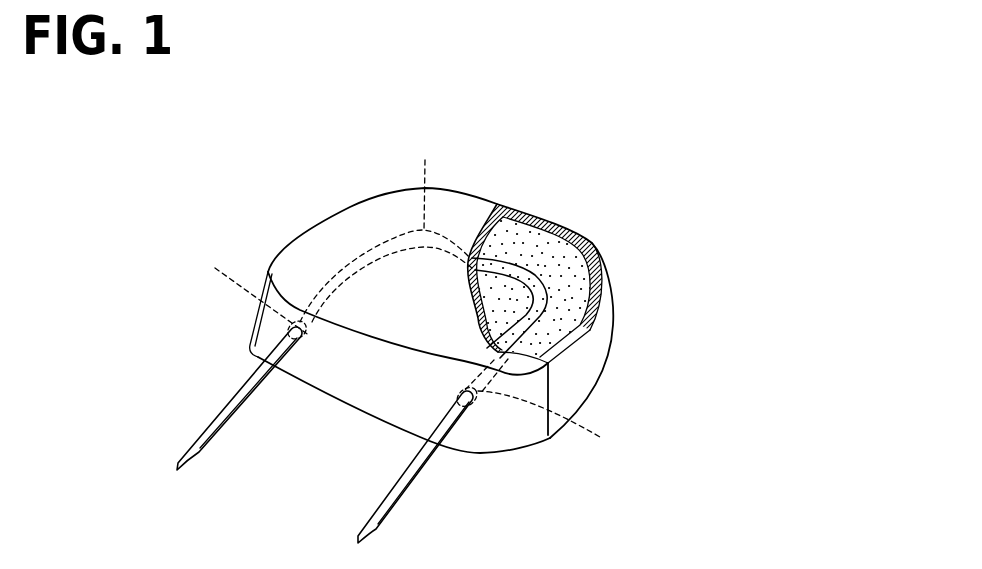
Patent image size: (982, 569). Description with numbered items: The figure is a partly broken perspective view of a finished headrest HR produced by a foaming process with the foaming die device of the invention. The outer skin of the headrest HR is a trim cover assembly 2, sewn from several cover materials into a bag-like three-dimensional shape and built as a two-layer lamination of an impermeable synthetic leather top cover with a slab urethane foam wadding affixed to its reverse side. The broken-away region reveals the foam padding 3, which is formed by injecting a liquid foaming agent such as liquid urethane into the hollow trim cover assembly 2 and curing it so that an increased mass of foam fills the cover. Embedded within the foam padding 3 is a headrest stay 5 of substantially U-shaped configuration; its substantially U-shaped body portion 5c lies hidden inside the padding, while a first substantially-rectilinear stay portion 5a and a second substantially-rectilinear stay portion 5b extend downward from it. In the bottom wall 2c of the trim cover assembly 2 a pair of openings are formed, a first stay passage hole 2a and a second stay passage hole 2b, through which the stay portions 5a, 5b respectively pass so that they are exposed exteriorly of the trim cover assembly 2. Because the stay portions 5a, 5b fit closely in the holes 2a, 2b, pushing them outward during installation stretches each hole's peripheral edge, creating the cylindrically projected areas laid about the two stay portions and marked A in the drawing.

The headrest HR is at (585, 198).
The trim cover assembly 2 is at (594, 244).
The first stay passage hole 2a is at (477, 407).
The second stay passage hole 2b is at (308, 340).
The bottom wall 2c is at (415, 356).
The foam padding 3 is at (568, 311).
The headrest stay 5 is at (191, 443).
The first substantially-rectilinear stay portion 5a is at (412, 490).
The second substantially-rectilinear stay portion 5b is at (231, 424).
The substantially U-shaped body portion 5c is at (429, 181).